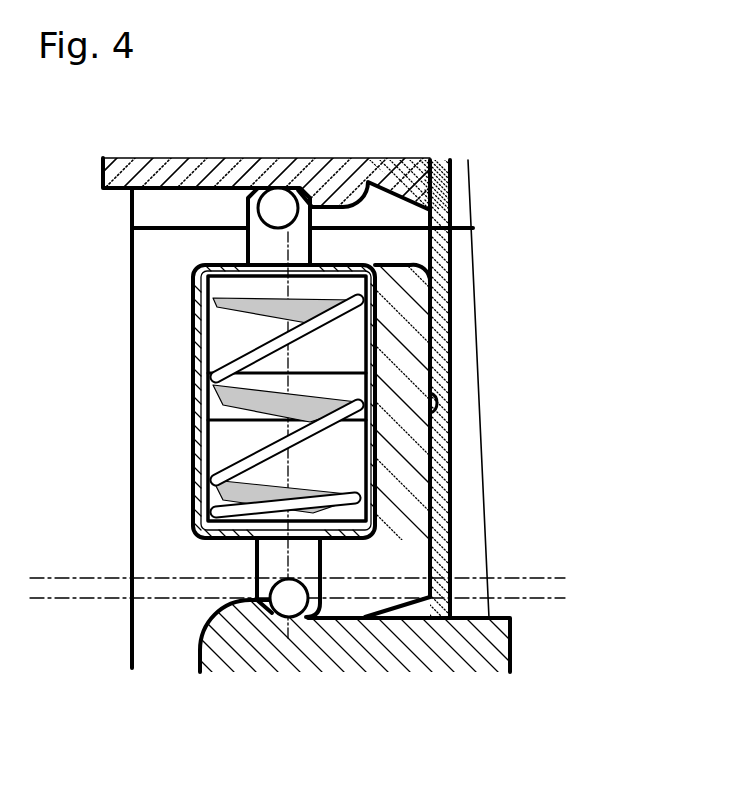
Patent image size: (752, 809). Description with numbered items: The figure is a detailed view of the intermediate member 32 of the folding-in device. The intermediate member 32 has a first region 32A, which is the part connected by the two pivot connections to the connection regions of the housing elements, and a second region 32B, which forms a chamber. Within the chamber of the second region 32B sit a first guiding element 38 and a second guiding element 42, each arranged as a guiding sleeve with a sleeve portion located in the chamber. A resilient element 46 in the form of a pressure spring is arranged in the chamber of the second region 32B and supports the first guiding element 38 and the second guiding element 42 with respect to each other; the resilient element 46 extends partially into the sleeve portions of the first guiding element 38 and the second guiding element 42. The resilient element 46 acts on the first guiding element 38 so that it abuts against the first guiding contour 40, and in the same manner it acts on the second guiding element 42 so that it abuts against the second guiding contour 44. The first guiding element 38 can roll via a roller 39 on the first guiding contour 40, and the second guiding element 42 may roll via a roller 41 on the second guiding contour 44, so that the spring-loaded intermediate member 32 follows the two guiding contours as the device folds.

The intermediate member 32 is at (516, 337).
The first region 32A is at (443, 360).
The second region 32B is at (410, 427).
The first guiding element 38 is at (288, 249).
The roller 39 is at (287, 213).
The first guiding contour 40 is at (335, 207).
The roller 41 is at (290, 603).
The second guiding element 42 is at (300, 556).
The second guiding contour 44 is at (205, 608).
The resilient element 46 is at (317, 435).